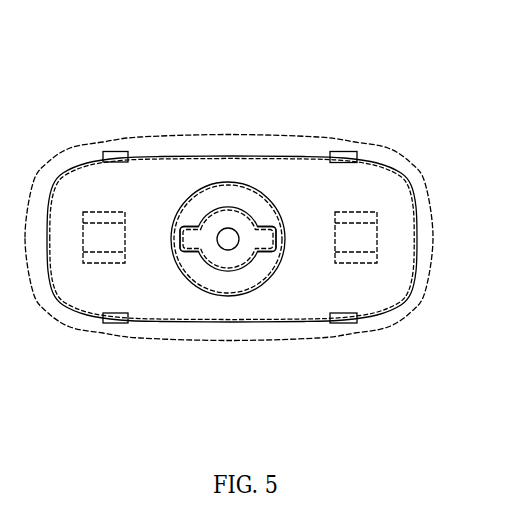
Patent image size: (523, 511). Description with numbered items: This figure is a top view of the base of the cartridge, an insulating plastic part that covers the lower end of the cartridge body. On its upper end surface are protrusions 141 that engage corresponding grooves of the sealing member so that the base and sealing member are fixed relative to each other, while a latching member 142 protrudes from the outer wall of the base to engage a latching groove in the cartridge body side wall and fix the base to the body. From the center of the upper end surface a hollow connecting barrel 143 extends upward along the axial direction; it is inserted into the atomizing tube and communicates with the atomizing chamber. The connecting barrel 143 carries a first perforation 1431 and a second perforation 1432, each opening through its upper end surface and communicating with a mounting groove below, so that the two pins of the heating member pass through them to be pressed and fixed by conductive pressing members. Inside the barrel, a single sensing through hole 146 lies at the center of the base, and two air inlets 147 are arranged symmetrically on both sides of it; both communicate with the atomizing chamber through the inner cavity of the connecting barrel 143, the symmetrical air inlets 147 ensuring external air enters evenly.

The protrusion 141 is at (360, 233).
The latching member 142 is at (343, 155).
The connecting barrel 143 is at (232, 191).
The first perforation 1431 is at (188, 228).
The second perforation 1432 is at (272, 230).
The sensing through hole 146 is at (226, 243).
The air inlet 147 is at (233, 270).